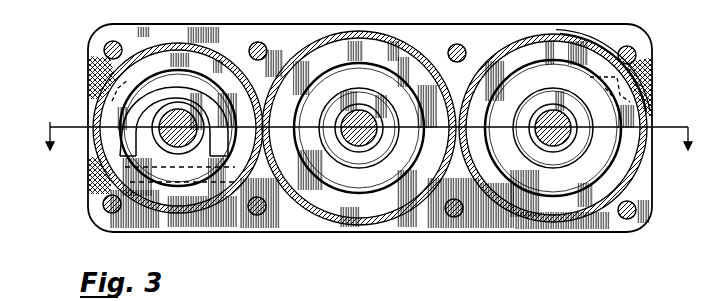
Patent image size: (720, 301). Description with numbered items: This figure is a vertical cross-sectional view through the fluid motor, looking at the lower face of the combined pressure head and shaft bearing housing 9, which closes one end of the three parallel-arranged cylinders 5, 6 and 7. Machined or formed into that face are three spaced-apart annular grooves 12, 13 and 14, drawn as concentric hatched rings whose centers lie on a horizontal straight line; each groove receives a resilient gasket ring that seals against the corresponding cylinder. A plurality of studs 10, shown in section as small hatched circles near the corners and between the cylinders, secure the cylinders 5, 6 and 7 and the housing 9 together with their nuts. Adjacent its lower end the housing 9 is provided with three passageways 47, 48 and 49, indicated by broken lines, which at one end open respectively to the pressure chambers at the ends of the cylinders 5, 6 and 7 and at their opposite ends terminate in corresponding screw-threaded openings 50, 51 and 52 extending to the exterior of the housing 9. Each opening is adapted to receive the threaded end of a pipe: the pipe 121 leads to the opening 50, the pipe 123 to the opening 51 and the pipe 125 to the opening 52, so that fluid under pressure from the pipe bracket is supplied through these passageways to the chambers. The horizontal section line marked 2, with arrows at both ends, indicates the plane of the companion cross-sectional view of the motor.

The section line 2- 2 is at (367, 147).
The cylinder 5 is at (177, 47).
The cylinder 6 is at (392, 33).
The cylinder 7 is at (563, 37).
The combined pressure head and shaft bearing housing 9 is at (488, 37).
The stud 10 is at (110, 41).
The annular groove 12 is at (153, 50).
The annular groove 13 is at (336, 33).
The annular groove 14 is at (583, 43).
The passageway 47 is at (97, 108).
The passageway 48 is at (167, 180).
The passageway 49 is at (630, 102).
The screw-threaded opening 50 is at (97, 44).
The screw-threaded opening 51 is at (90, 207).
The screw-threaded opening 52 is at (652, 57).
The pipe 121 is at (80, 77).
The pipe 123 is at (78, 187).
The pipe 125 is at (688, 85).